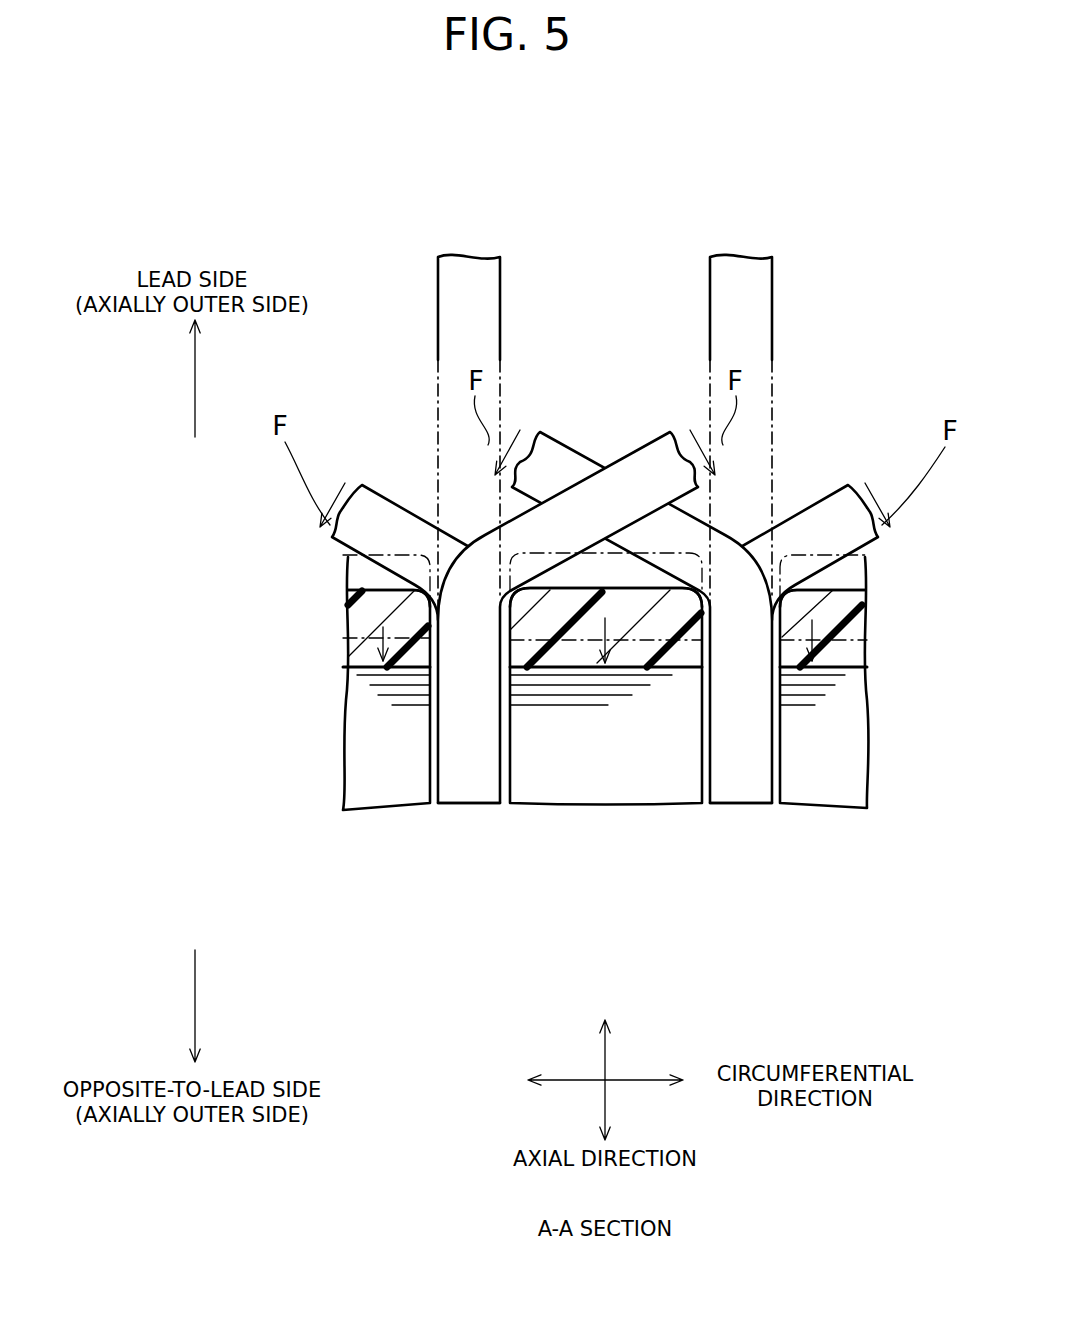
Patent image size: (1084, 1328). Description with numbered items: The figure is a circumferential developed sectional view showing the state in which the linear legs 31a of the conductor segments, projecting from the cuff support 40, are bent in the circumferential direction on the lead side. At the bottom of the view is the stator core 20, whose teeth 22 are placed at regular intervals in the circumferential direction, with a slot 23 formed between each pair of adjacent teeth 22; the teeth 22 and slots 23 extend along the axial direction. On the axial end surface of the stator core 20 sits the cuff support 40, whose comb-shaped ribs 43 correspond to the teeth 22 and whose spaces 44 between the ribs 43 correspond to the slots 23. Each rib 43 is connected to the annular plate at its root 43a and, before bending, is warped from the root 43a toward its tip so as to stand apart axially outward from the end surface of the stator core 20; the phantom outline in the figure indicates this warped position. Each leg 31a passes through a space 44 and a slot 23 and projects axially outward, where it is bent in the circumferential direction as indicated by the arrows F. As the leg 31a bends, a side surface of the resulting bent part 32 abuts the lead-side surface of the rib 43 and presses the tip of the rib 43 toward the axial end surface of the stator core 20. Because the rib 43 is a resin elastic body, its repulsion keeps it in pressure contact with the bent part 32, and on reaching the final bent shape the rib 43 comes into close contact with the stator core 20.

The stator core 20 is at (508, 615).
The teeth 22 is at (368, 797).
The slot 23 is at (453, 793).
The leg 31a is at (500, 292).
The bent part 32 is at (392, 513).
The cuff support 40 is at (330, 645).
The rib 43 is at (378, 589).
The root 43a is at (678, 550).
The space 44 is at (425, 653).